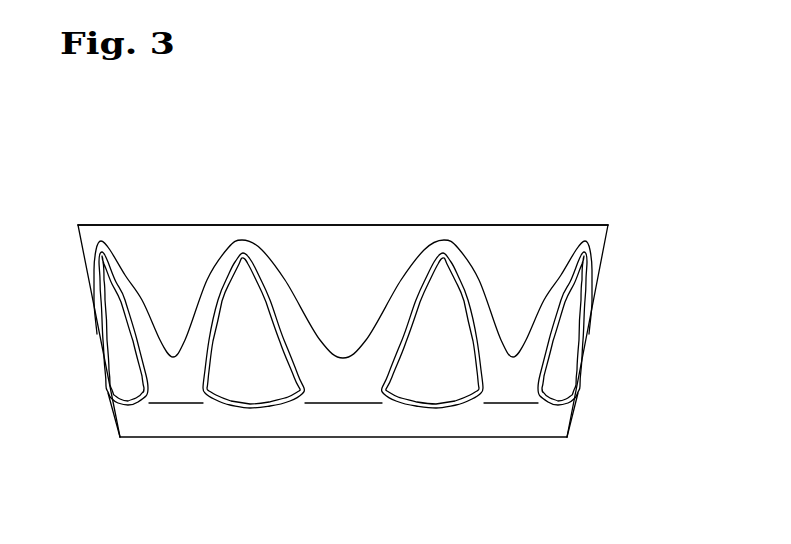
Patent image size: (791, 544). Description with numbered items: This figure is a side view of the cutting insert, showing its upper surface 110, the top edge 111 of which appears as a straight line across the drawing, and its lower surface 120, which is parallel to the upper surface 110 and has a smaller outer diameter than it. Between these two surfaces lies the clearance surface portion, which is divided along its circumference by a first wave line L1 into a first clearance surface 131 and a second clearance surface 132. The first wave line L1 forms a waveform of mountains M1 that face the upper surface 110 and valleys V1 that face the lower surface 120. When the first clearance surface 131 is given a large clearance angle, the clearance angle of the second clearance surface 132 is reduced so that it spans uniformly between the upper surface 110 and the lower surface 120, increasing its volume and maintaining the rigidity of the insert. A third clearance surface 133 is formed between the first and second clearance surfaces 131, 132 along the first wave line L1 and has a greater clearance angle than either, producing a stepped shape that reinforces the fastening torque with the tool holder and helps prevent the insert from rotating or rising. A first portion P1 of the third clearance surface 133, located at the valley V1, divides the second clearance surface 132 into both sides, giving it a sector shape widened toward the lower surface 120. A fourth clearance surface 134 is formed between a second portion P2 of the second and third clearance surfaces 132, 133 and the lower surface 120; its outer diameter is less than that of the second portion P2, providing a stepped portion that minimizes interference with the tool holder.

The upper surface 110 is at (558, 225).
The top surface 111 is at (608, 225).
The lower surface 120 is at (548, 437).
The first clearance surface 131 is at (533, 298).
The second clearance surface 132 is at (449, 379).
The third clearance surface 133 is at (495, 390).
The fourth clearance surface 134 is at (357, 425).
The mountain M1 is at (242, 239).
The first wave line L1 is at (299, 289).
The valley V1 is at (345, 360).
The first portion P1 is at (508, 397).
The second portion P2 is at (407, 406).